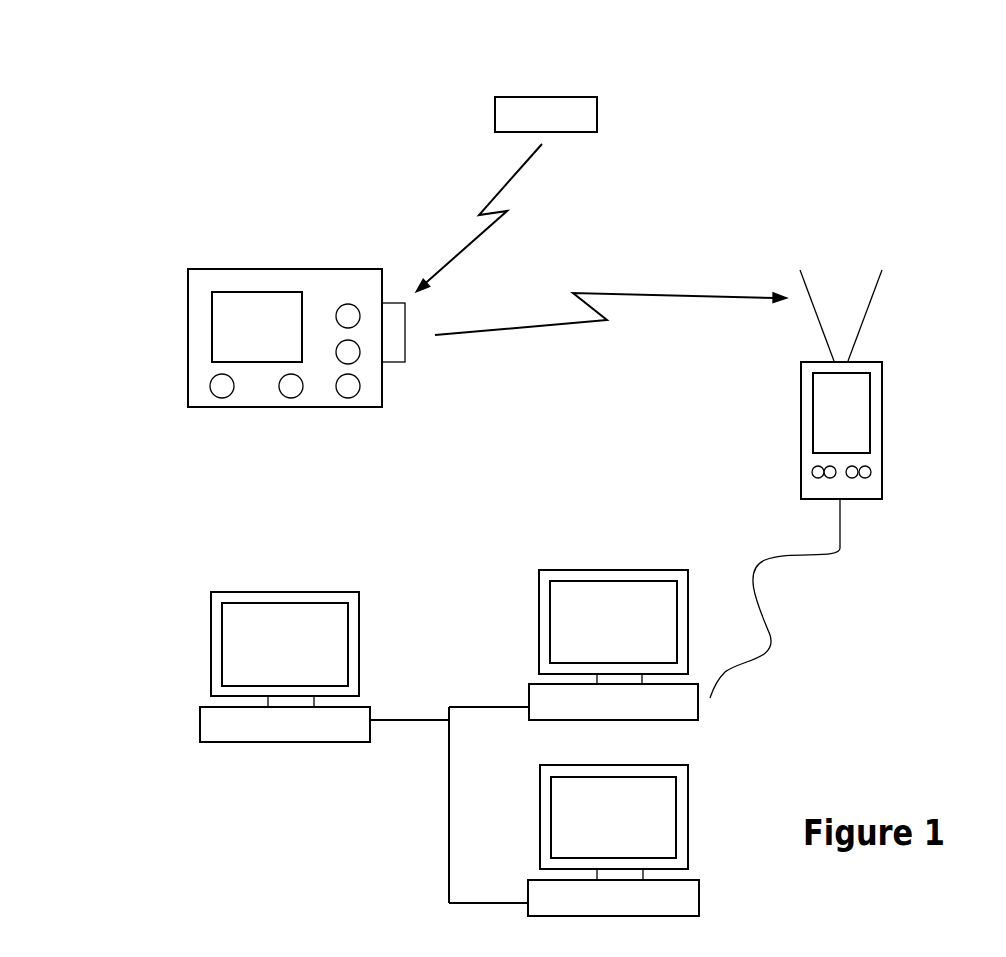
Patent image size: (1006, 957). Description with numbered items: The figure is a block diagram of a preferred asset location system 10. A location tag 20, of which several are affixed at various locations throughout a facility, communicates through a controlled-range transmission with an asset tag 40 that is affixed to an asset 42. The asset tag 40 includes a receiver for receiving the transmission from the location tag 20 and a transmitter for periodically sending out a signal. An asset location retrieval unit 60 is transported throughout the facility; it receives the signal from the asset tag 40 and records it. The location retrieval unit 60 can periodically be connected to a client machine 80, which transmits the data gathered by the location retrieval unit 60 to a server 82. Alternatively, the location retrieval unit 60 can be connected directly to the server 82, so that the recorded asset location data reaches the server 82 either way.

The asset location system 10 is at (204, 134).
The location tag 20 is at (568, 114).
The asset tag 40 is at (327, 335).
The asset 42 is at (293, 277).
The asset location retrieval unit 60 is at (873, 460).
The client machine 80 is at (624, 594).
The server 82 is at (291, 617).